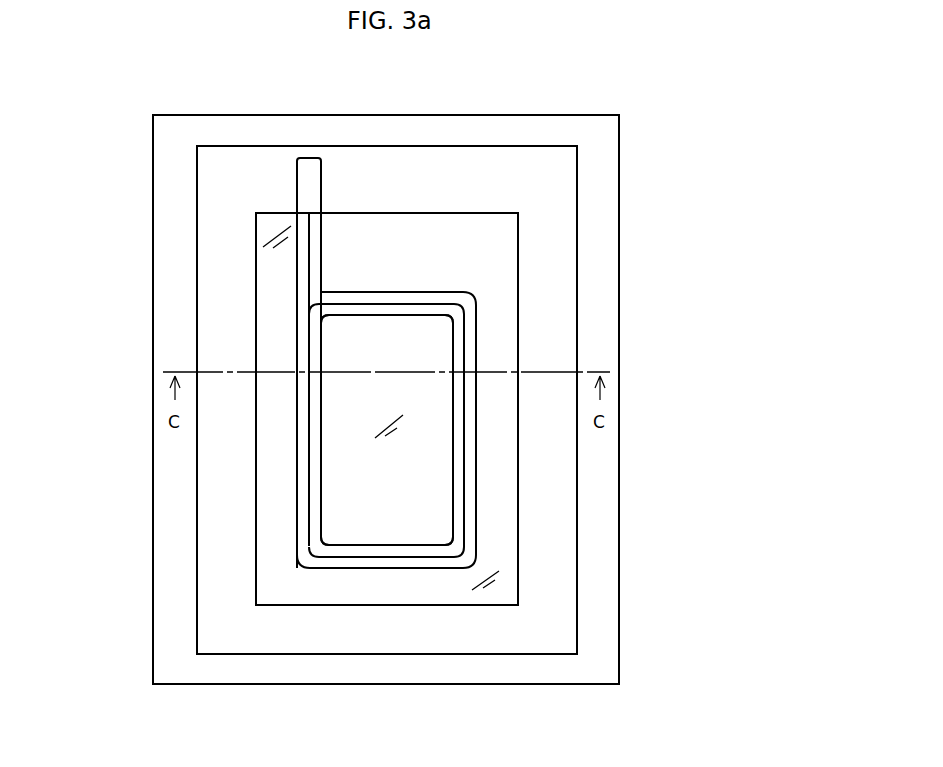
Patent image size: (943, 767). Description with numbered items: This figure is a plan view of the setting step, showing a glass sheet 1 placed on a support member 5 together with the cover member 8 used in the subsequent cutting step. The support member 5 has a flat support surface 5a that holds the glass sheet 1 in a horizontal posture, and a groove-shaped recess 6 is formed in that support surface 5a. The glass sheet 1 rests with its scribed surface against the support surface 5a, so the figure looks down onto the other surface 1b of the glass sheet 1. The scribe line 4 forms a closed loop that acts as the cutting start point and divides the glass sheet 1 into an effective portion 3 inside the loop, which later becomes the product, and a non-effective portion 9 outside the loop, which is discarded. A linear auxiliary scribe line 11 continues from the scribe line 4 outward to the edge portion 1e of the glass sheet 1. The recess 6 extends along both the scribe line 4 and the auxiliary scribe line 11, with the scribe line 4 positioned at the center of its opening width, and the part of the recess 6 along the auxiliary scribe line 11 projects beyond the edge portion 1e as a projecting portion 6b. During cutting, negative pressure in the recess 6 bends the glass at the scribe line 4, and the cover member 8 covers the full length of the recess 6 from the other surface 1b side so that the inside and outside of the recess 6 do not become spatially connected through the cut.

The glass sheet 1 is at (450, 197).
The another surface 1b is at (397, 232).
The edge portion 1e is at (271, 211).
The effective portion 3 is at (380, 526).
The scribe line 4 is at (304, 470).
The support member 5 is at (650, 199).
The support surface 5a is at (600, 534).
The recess 6 is at (472, 457).
The projecting portion 6b is at (310, 168).
The cover member 8 is at (180, 325).
The non-effective portion 9 is at (486, 246).
The auxiliary scribe line 11 is at (304, 283).